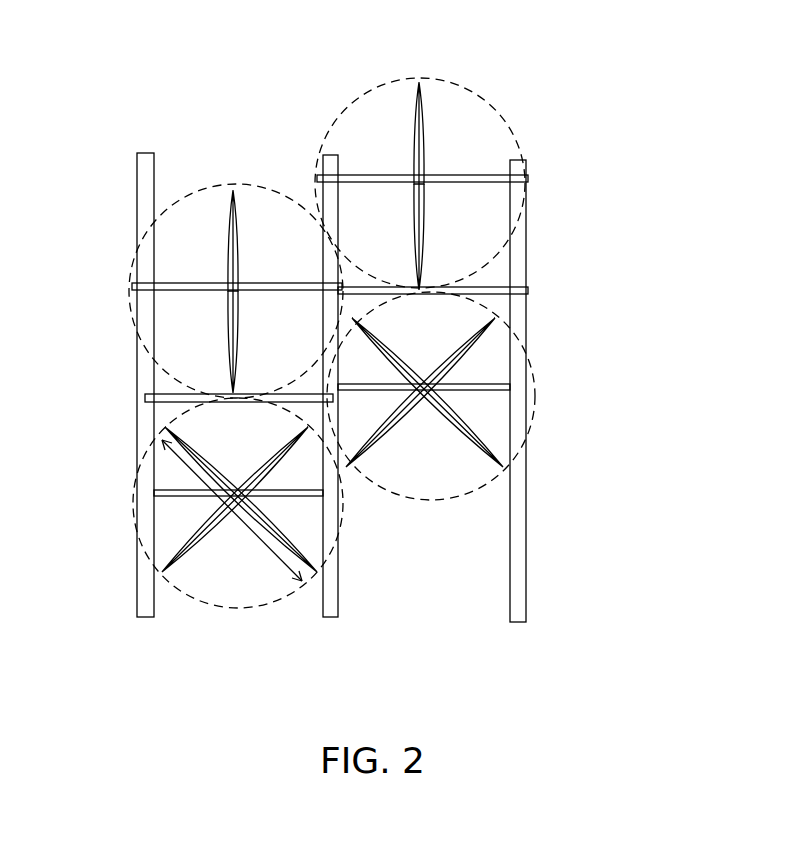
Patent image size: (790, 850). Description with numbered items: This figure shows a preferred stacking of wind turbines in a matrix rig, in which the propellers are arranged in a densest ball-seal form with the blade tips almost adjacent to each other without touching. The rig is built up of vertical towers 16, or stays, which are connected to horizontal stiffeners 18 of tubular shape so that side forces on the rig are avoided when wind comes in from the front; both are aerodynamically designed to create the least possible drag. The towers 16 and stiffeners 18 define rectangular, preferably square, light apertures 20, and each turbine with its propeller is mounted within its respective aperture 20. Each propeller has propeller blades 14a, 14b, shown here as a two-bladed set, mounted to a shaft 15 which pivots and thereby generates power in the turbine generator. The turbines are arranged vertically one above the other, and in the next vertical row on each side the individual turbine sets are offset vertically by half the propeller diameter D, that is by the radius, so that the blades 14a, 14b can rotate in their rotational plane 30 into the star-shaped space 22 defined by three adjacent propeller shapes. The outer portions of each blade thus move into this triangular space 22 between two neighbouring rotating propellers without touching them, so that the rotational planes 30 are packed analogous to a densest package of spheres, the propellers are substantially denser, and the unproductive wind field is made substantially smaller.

The propeller blade 14a is at (232, 227).
The propeller blade 14b is at (232, 335).
The shaft 15 is at (413, 176).
The vertical tower 16 is at (145, 172).
The horizontal stiffener 18 is at (470, 178).
The light aperture 20 is at (446, 221).
The star-shaped space 22 is at (353, 277).
The rotational plane 30 is at (393, 78).
The propeller diameter D is at (257, 537).